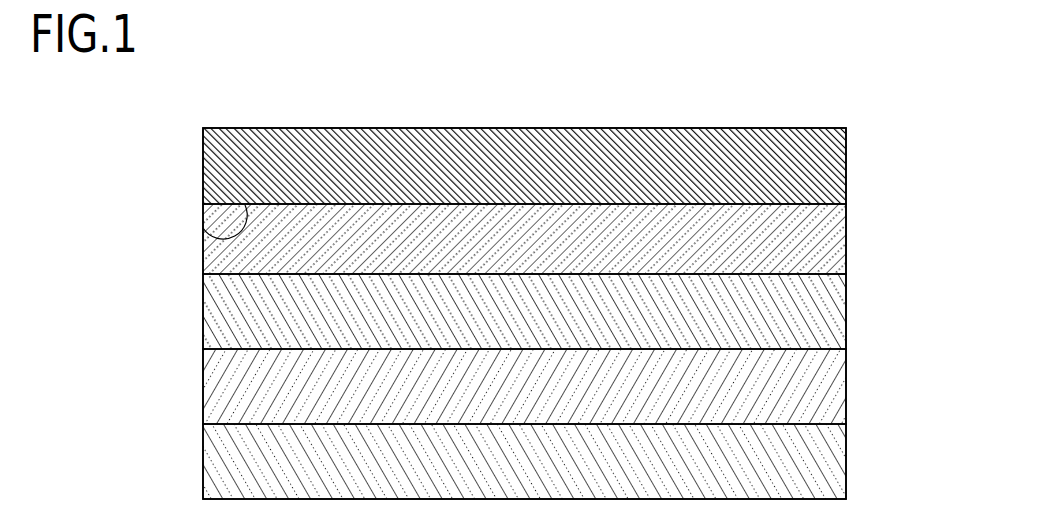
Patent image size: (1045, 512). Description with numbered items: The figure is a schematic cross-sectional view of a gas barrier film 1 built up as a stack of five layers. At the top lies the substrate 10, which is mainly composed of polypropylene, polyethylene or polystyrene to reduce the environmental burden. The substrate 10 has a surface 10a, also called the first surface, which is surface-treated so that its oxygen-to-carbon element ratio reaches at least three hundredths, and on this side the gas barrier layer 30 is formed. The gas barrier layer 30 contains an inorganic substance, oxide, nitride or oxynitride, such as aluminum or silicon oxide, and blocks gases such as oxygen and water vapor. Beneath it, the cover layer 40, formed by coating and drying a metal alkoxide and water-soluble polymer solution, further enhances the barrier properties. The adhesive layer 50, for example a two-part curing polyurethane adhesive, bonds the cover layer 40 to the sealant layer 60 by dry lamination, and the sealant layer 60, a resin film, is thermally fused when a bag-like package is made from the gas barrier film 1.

The gas barrier film 1 is at (645, 101).
The substrate 10 is at (846, 172).
The surface 10a is at (203, 229).
The gas barrier layer 30 is at (846, 243).
The cover layer 40 is at (846, 313).
The adhesive layer 50 is at (846, 385).
The sealant layer 60 is at (846, 463).